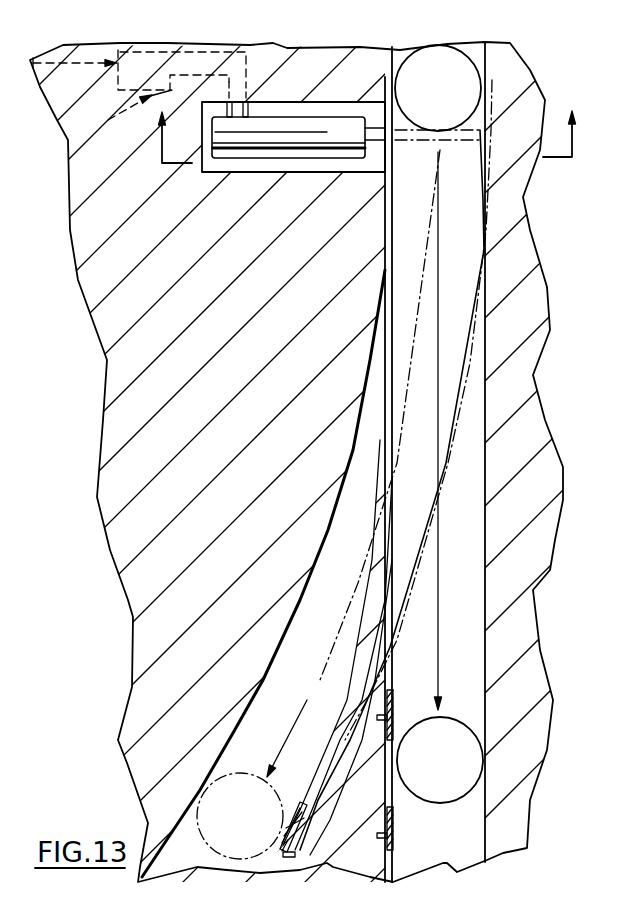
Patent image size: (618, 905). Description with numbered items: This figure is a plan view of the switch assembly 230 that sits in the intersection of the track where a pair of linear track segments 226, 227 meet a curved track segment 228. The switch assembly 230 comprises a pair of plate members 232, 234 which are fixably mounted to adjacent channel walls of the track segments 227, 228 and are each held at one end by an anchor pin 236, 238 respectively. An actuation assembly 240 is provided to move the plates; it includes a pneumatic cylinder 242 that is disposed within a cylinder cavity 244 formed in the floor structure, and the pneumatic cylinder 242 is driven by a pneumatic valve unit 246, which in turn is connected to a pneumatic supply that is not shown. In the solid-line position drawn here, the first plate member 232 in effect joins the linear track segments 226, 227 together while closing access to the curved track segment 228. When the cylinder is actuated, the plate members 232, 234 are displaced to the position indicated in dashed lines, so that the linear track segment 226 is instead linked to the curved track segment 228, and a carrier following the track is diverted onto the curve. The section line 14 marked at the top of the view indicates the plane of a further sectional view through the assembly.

The section line 14- 14 is at (370, 149).
The linear track segment 226 is at (489, 55).
The linear track segment 227 is at (489, 805).
The curved track segment 228 is at (236, 721).
The switch assembly 230 is at (292, 297).
The plate member 232 is at (386, 377).
The plate member 234 is at (372, 582).
The anchor pin 236 is at (393, 835).
The anchor pin 238 is at (277, 847).
The actuation assembly 240 is at (261, 186).
The pneumatic cylinder 242 is at (293, 137).
The cylinder cavity 244 is at (227, 170).
The pneumatic valve unit 246 is at (139, 102).